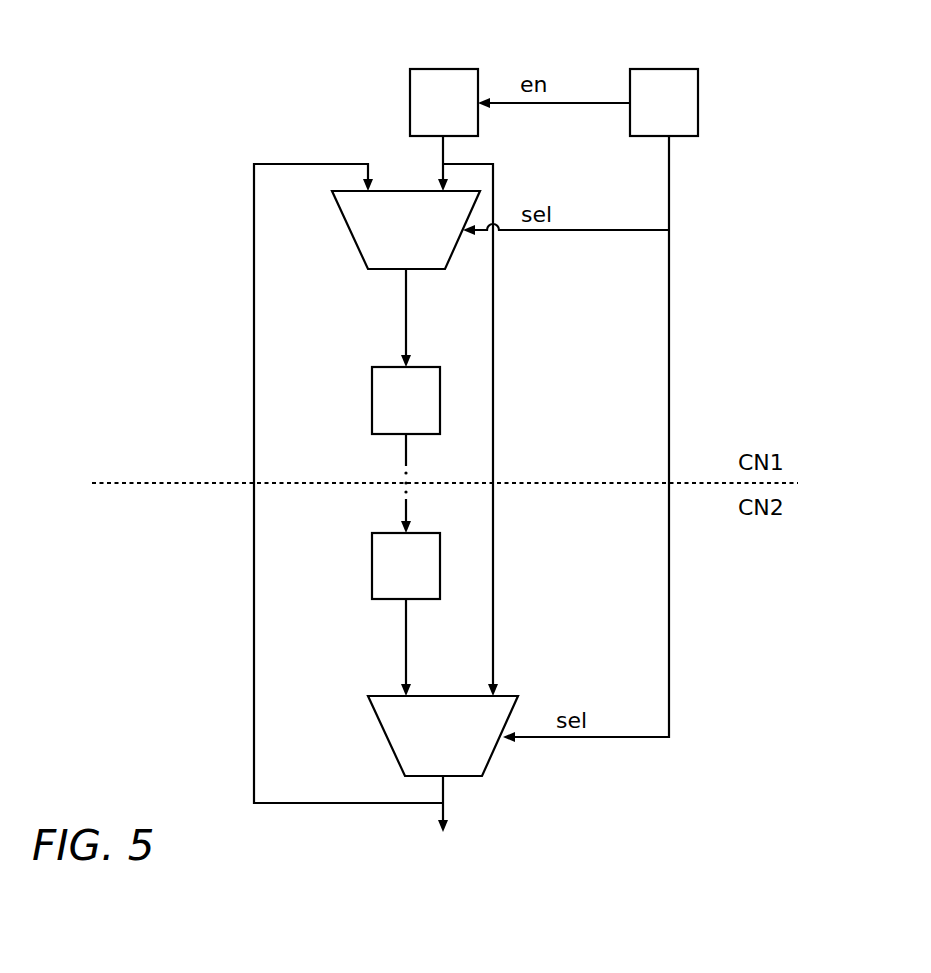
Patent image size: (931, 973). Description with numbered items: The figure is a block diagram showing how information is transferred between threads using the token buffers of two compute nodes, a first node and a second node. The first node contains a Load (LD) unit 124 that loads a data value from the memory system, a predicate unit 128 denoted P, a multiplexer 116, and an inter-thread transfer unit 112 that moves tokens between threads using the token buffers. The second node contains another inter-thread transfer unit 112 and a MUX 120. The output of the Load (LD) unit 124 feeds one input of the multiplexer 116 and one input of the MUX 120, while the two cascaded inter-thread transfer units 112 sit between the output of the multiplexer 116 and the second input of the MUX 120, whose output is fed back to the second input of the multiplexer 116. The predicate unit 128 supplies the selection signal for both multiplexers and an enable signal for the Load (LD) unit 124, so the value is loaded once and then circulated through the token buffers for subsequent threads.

The inter-thread transfer unit 112 is at (372, 404).
The multiplexer 116 is at (346, 232).
The MUX 120 is at (397, 761).
The Load (LD) unit 124 is at (440, 69).
The predicate unit 128 is at (668, 69).